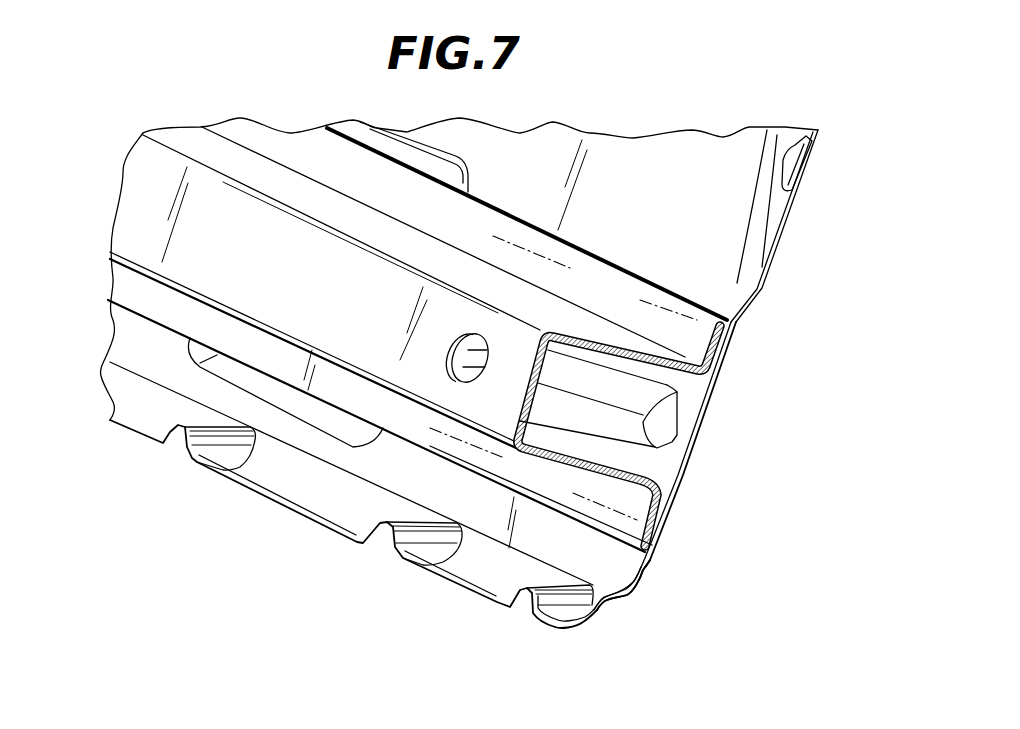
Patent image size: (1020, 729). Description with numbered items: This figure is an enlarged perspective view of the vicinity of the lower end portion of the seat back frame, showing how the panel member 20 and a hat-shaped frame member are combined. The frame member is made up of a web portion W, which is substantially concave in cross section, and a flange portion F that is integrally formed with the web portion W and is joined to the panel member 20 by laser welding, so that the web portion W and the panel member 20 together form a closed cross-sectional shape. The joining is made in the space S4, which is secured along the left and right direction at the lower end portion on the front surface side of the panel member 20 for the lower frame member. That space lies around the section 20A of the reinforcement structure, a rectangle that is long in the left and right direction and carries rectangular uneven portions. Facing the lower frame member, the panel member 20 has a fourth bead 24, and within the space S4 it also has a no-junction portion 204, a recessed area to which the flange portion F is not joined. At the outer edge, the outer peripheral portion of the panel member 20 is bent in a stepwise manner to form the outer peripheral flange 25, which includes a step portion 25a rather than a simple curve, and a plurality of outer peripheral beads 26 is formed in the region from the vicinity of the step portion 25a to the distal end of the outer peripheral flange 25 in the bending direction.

The panel member 20 is at (628, 155).
The section of the reinforcement structure 20A is at (135, 205).
The web portion W is at (122, 230).
The flange portion F is at (607, 276).
The fourth bead 24 is at (633, 410).
The outer peripheral beads 26 is at (183, 440).
The no-junction portion 204 is at (290, 410).
The space for joining the lower frame member S4 is at (399, 445).
The outer peripheral flange 25 is at (437, 583).
The step portion 25a is at (599, 618).